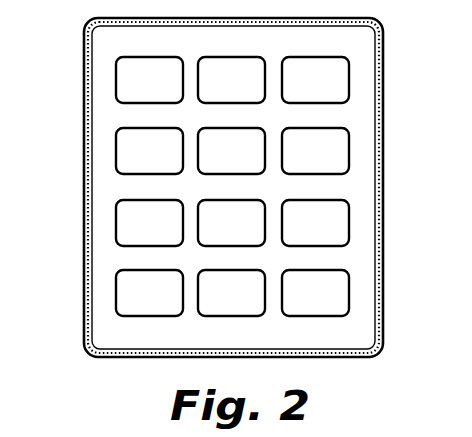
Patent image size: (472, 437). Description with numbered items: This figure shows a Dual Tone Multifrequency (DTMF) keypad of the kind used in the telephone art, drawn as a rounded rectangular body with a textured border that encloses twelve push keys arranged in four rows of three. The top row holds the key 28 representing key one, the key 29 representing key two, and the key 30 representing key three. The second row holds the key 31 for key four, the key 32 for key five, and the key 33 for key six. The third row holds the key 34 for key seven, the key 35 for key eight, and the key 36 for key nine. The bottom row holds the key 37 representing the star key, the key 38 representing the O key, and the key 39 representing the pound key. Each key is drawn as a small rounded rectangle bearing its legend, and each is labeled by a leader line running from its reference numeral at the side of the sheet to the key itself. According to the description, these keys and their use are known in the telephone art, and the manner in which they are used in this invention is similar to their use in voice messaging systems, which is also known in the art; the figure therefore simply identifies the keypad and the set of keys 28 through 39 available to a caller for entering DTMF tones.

The key 28 is at (120, 82).
The key 29 is at (254, 68).
The key 30 is at (347, 84).
The key 31 is at (120, 153).
The key 32 is at (254, 140).
The key 33 is at (347, 155).
The key 34 is at (120, 224).
The key 35 is at (256, 228).
The key 36 is at (347, 227).
The key 37 is at (120, 293).
The key 38 is at (254, 306).
The key 39 is at (347, 288).